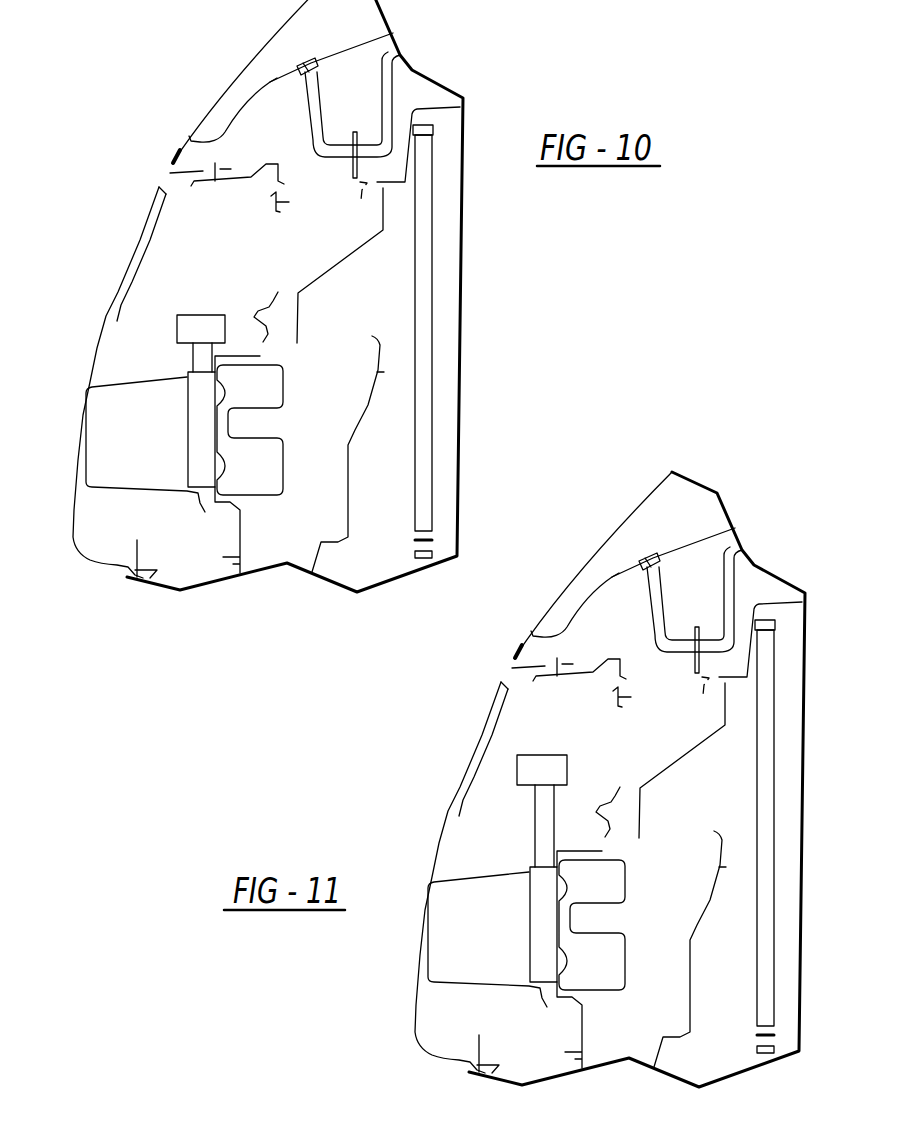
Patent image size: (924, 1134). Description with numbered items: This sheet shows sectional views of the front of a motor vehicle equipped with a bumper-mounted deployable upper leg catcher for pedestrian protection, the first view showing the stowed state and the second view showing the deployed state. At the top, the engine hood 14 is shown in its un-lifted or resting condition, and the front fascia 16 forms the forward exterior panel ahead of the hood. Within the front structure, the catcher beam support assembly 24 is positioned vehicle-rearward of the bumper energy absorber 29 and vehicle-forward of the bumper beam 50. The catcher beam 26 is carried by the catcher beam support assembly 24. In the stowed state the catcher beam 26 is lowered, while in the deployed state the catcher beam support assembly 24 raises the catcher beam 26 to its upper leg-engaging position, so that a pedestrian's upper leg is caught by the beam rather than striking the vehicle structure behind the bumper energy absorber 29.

In FIG. 10, the engine hood 14 is at (243, 86).
In FIG. 11, the engine hood 14 is at (577, 592).
In FIG. 10, the front fascia 16 is at (110, 525).
In FIG. 11, the front fascia 16 is at (450, 1018).
In FIG. 10, the catcher beam support assembly 24 is at (202, 417).
In FIG. 11, the catcher beam support assembly 24 is at (538, 905).
In FIG. 10, the catcher beam 26 is at (202, 330).
In FIG. 11, the catcher beam 26 is at (535, 772).
In FIG. 10, the bumper energy absorber 29 is at (113, 438).
In FIG. 11, the bumper energy absorber 29 is at (453, 942).
In FIG. 10, the bumper beam 50 is at (267, 477).
In FIG. 11, the bumper beam 50 is at (598, 963).